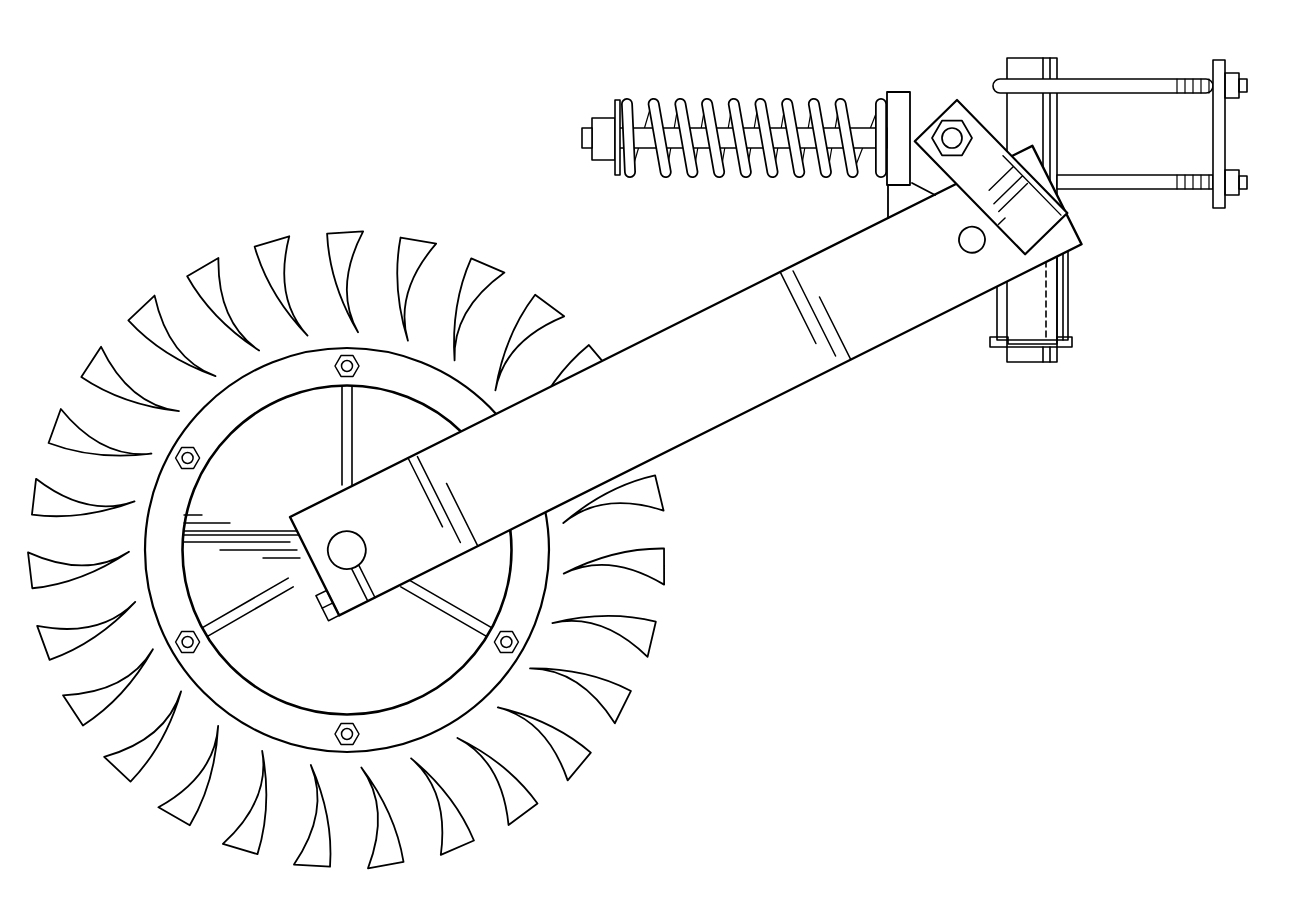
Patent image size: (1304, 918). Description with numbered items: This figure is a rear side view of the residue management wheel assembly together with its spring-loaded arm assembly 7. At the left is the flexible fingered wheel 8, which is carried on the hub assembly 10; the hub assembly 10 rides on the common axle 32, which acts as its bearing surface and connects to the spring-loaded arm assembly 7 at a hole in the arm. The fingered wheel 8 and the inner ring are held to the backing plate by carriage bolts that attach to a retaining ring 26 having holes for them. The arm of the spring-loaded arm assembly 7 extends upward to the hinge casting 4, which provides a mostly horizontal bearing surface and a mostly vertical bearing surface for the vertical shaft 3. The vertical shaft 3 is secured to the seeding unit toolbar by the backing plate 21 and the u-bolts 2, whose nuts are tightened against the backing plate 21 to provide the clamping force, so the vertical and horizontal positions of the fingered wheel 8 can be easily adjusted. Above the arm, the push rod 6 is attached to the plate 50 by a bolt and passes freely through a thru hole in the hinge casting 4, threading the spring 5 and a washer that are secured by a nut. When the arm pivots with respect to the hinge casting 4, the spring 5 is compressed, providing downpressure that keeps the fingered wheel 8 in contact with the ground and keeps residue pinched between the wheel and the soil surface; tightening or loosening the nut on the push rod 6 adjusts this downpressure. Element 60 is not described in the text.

The u-bolts 2 is at (1152, 79).
The vertical shaft 3 is at (1058, 128).
The hinge casting 4 is at (1069, 284).
The spring 5 is at (733, 97).
The push rod 6 is at (780, 138).
The spring-loaded arm assembly 7 is at (668, 304).
The flexible fingered wheel 8 is at (273, 240).
The hub assembly 10 is at (360, 663).
The backing plate 21 is at (1227, 128).
The retaining ring 26 is at (443, 690).
The common axle 32 is at (342, 537).
The plate 50 is at (1074, 213).
The bottom flange 60 is at (1073, 341).